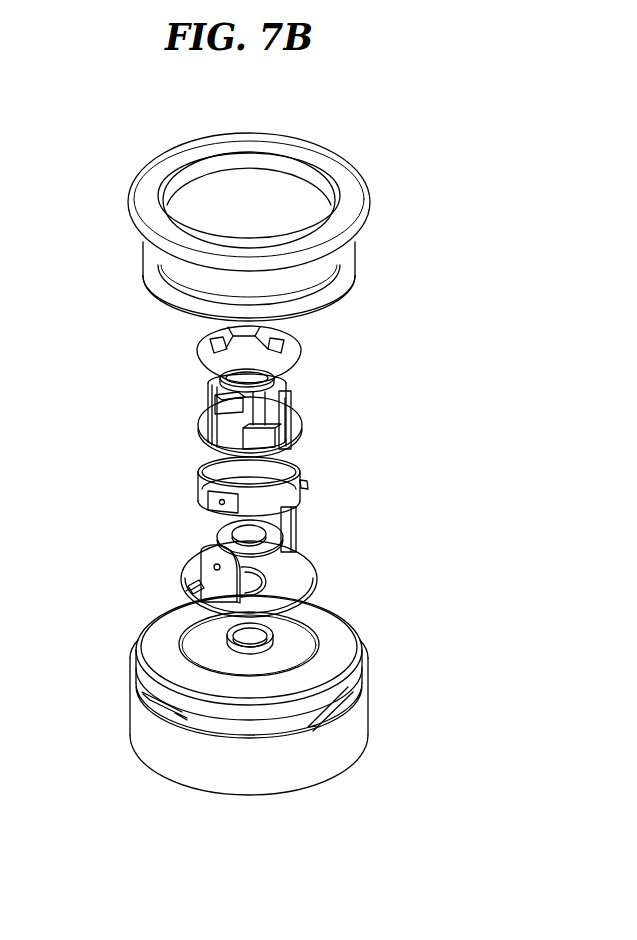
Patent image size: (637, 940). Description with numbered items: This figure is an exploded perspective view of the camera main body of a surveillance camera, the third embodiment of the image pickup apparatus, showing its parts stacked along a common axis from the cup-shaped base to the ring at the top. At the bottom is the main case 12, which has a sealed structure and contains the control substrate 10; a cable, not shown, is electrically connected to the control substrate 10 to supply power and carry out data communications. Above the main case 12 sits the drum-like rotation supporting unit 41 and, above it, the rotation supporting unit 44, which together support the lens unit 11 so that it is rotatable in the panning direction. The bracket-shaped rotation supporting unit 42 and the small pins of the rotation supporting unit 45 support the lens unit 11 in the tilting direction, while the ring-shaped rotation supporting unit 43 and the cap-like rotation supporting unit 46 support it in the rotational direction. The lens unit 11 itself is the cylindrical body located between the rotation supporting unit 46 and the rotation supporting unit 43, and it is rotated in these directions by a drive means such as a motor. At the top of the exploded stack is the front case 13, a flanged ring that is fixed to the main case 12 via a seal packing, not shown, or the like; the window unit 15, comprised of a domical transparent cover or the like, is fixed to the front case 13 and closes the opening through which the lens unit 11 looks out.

The control substrate 10 is at (185, 713).
The lens unit 11 is at (226, 424).
The main case 12 is at (364, 727).
The front case 13 is at (152, 181).
The window unit 15 is at (236, 178).
The rotation supporting unit 41 is at (346, 637).
The rotation supporting unit 42 is at (204, 567).
The rotation supporting unit 43 is at (210, 499).
The rotation supporting unit 44 is at (221, 537).
The rotation supporting unit 45 is at (310, 484).
The rotation supporting unit 46 is at (304, 343).